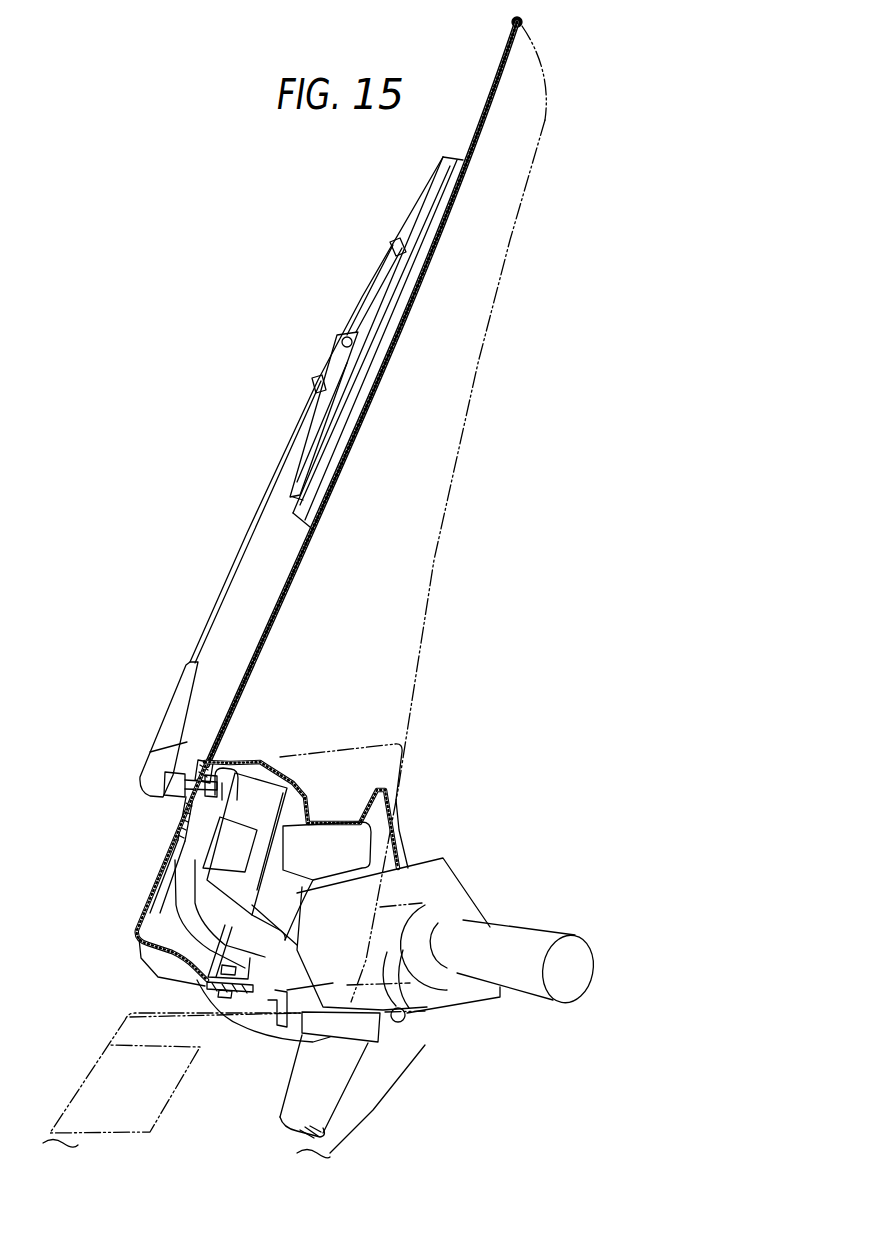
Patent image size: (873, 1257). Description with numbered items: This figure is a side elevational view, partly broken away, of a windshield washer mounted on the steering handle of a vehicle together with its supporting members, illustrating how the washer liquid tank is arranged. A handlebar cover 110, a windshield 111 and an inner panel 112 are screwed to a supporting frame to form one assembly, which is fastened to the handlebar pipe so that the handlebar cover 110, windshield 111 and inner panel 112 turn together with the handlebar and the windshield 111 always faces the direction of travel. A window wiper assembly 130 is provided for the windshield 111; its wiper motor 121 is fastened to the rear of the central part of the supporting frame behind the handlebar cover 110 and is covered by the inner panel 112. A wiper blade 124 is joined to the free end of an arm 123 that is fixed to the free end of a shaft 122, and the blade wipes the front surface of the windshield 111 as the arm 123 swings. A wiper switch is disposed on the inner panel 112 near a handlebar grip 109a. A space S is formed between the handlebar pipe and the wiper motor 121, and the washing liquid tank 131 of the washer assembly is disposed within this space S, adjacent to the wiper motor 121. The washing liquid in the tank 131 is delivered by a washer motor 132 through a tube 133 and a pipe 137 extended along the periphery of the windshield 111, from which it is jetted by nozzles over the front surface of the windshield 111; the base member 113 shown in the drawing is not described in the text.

The handlebar grip 109a is at (535, 942).
The handlebar cover 110 is at (170, 848).
The windshield 111 is at (317, 513).
The inner panel 112 is at (307, 807).
The base plate 113 is at (414, 870).
The wiper motor 121 is at (255, 810).
The shaft 122 is at (190, 795).
The arm 123 is at (245, 533).
The wiper blade 124 is at (388, 328).
The window wiper assembly 130 is at (277, 907).
The washing liquid tank 131 is at (317, 852).
The washer motor 132 is at (214, 870).
The tube 133 is at (237, 768).
The pipe 137 is at (203, 760).
The space S is at (377, 833).